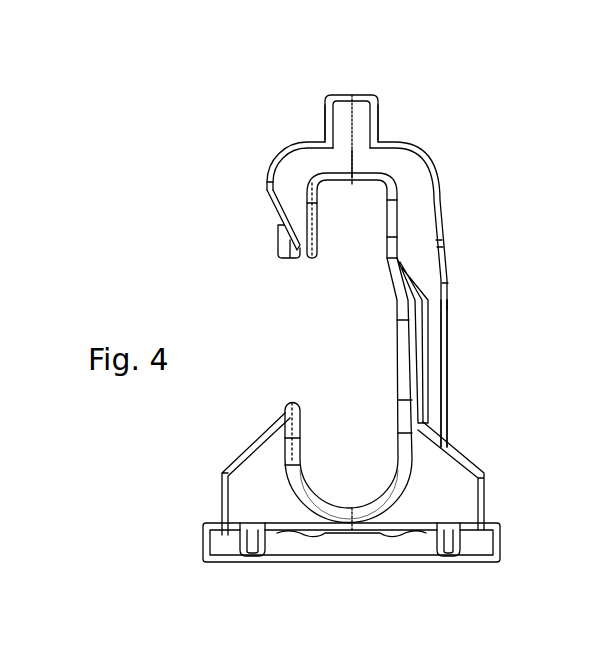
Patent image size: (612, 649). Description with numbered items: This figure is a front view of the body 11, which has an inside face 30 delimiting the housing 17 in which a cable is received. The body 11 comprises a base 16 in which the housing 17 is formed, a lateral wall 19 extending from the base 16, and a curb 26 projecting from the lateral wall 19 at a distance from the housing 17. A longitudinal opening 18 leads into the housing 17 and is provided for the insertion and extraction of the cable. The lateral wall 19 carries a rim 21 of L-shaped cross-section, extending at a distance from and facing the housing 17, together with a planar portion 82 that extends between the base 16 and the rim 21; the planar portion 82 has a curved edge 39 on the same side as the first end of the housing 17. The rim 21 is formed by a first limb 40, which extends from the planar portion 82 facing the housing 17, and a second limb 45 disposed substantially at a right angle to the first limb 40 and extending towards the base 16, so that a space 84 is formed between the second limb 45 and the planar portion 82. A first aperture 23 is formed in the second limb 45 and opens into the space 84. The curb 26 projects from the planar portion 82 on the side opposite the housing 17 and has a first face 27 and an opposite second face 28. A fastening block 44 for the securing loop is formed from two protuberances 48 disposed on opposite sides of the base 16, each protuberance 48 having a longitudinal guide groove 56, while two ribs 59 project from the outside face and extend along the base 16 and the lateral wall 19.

The body 11 is at (100, 425).
The base 16 is at (185, 522).
The housing 17 is at (328, 460).
The longitudinal opening 18 is at (333, 408).
The lateral wall 19 is at (500, 210).
The rim 21 is at (280, 155).
The first aperture 23 is at (266, 239).
The curb 26 is at (363, 108).
The first face 27 is at (323, 118).
The second face 28 is at (383, 115).
The inside face 30 is at (400, 360).
The curved edge 39 is at (408, 382).
The first limb 40 is at (353, 162).
The fastening block 44 is at (188, 575).
The second limb 45 is at (282, 203).
The protuberances 48 is at (220, 487).
The longitudinal guide groove 56 is at (257, 547).
The ribs 59 is at (443, 283).
The planar portion 82 is at (397, 302).
The space 84 is at (347, 222).